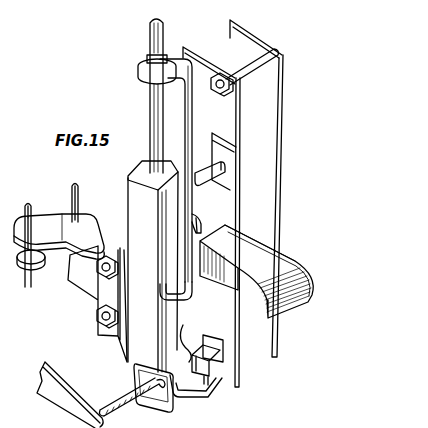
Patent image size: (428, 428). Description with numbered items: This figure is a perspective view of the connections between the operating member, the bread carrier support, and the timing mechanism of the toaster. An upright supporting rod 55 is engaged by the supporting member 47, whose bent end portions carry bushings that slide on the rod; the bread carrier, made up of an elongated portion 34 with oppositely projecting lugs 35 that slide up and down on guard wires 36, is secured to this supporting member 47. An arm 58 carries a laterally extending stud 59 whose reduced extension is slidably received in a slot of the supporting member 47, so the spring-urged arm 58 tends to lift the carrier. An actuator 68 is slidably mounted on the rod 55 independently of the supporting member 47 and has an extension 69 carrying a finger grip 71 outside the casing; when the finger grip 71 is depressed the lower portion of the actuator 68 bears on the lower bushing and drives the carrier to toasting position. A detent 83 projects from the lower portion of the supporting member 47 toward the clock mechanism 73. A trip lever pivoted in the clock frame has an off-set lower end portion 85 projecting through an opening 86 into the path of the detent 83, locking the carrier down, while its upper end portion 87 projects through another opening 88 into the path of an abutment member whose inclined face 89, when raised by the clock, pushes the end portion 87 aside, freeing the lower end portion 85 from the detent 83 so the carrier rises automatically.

The upright supporting rod 55 is at (150, 35).
The actuator 68 is at (180, 128).
The clock mechanism 73 is at (295, 167).
The supporting member 47 is at (135, 196).
The stud 59 is at (110, 412).
The arm 58 is at (57, 390).
The guard wires 36 is at (72, 190).
The elongated portion 34 is at (39, 228).
The lugs 35 is at (39, 252).
The opening 88 is at (218, 150).
The upper end portion 87 is at (207, 175).
The inclined face 89 is at (199, 226).
The extension 69 is at (192, 238).
The finger grip 71 is at (297, 262).
The opening 86 is at (206, 344).
The lower end portion 85 is at (200, 368).
The detent 83 is at (206, 388).